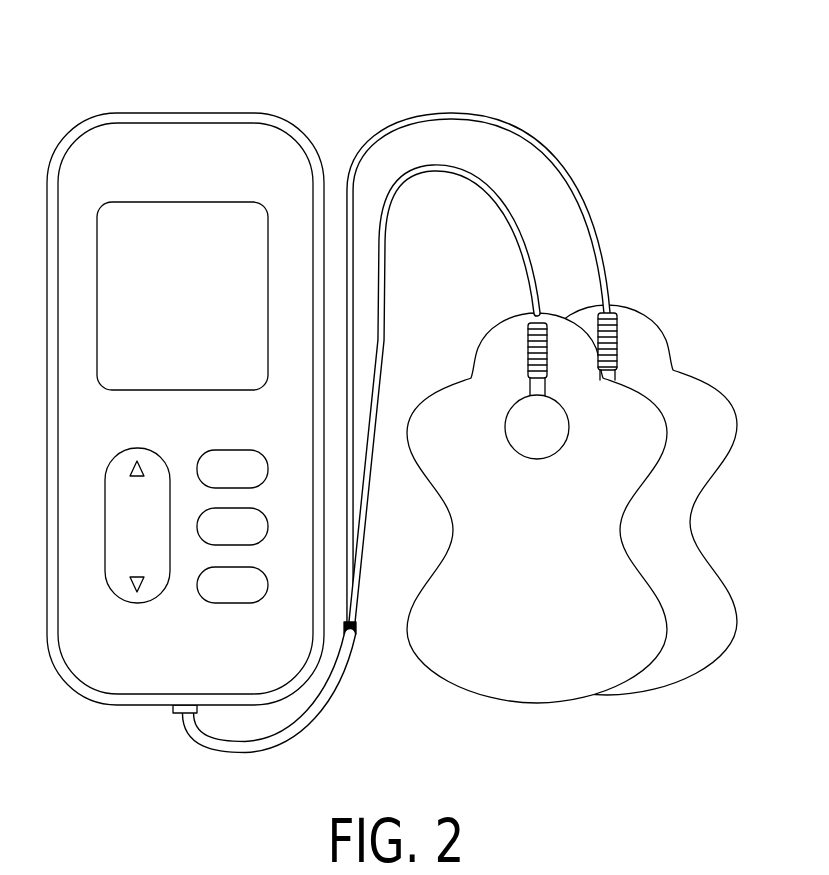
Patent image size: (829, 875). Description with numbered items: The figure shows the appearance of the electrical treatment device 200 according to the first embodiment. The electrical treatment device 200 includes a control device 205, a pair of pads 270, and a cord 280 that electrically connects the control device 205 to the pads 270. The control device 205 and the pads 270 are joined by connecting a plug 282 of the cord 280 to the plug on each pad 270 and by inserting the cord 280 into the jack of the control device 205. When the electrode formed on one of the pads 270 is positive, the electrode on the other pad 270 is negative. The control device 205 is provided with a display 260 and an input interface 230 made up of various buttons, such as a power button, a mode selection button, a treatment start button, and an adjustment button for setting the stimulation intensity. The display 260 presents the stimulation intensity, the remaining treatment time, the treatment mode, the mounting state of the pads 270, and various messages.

The electrical treatment device 200 is at (361, 60).
The control device 205 is at (207, 113).
The input interface 230 is at (105, 616).
The display 260 is at (205, 202).
The pads 270 is at (593, 702).
The cord 280 is at (267, 750).
The plug 282 is at (540, 460).